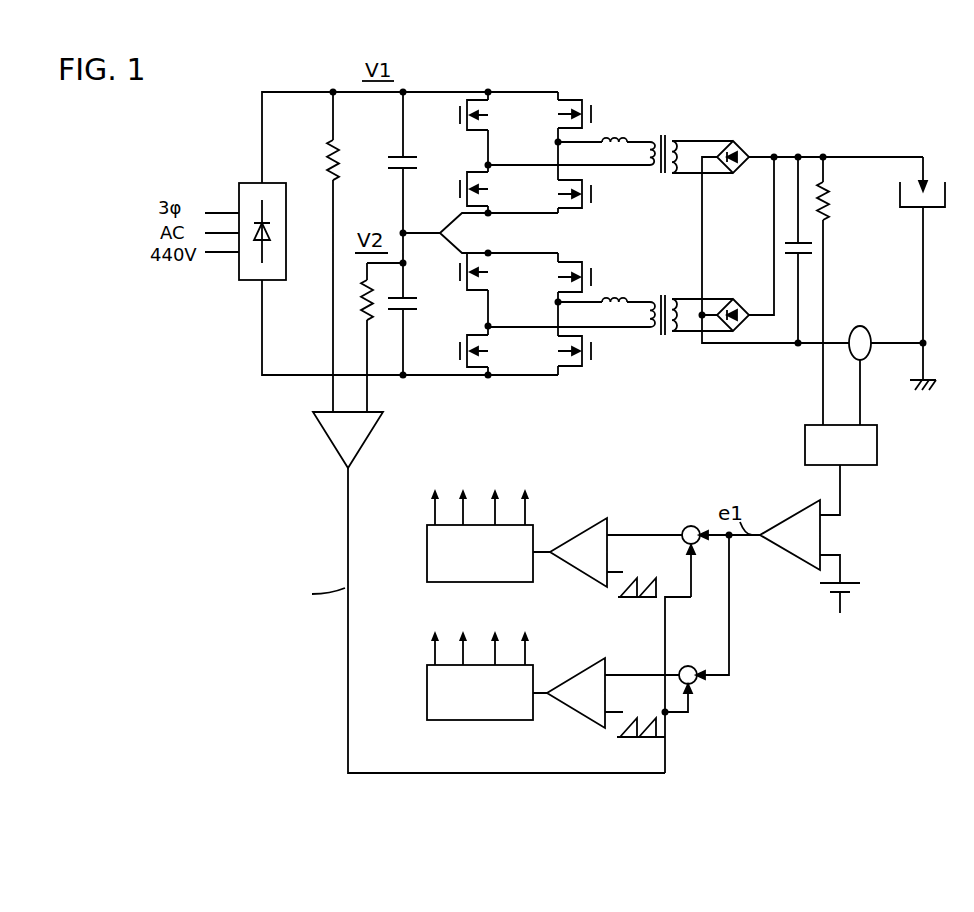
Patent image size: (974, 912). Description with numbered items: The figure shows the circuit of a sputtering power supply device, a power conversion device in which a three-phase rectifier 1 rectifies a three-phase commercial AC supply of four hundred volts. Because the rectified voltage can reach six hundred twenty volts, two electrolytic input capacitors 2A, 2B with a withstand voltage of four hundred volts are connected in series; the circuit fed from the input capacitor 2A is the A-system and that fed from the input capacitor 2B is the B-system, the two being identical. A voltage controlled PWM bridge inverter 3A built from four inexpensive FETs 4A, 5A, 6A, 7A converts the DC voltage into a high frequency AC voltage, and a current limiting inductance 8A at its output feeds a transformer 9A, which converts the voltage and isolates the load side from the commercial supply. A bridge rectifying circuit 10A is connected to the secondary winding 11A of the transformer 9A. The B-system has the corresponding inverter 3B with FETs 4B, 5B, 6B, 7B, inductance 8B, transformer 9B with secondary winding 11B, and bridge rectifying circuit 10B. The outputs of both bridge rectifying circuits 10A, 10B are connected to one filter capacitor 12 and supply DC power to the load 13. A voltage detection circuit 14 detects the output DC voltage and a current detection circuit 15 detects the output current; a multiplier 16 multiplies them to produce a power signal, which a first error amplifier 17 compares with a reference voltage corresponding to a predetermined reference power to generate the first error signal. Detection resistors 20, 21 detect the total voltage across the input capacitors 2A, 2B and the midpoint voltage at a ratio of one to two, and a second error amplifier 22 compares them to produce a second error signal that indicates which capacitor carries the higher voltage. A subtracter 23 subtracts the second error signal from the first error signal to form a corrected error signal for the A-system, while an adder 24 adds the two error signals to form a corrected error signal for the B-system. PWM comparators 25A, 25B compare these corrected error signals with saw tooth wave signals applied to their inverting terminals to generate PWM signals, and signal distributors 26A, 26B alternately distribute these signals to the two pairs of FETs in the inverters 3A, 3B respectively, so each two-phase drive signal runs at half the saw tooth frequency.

The three-phase rectifier 1 is at (252, 183).
The detection resistor 20 is at (337, 148).
The detection resistor 21 is at (364, 323).
The input capacitor 2A is at (397, 170).
The input capacitor 2B is at (398, 312).
The bridge inverter 3A is at (532, 81).
The bridge inverter 3B is at (532, 402).
The FET 4A is at (457, 109).
The FET 5A is at (586, 103).
The FET 6A is at (456, 184).
The FET 7A is at (592, 187).
The FET 4B is at (457, 272).
The FET 5B is at (586, 266).
The FET 6B is at (456, 346).
The FET 7B is at (593, 344).
The current limiting inductance 8A is at (612, 140).
The current limiting inductance 8B is at (610, 299).
The transformer 9A is at (691, 120).
The transformer 9B is at (691, 315).
The bridge rectifying circuit 10A is at (742, 147).
The bridge rectifying circuit 10B is at (737, 305).
The secondary winding 11A is at (685, 137).
The secondary winding 11B is at (668, 335).
The filter capacitor 12 is at (805, 257).
The load 13 is at (947, 188).
The voltage detection circuit 14 is at (834, 200).
The current detection circuit 15 is at (868, 330).
The multiplier 16 is at (877, 447).
The first error amplifier 17 is at (792, 518).
The second error amplifier 22 is at (368, 442).
The subtracter 23 is at (693, 527).
The adder 24 is at (692, 665).
The PWM comparator 25A is at (573, 530).
The PWM comparator 25B is at (573, 713).
The signal distributor 26A is at (427, 552).
The signal distributor 26B is at (427, 692).